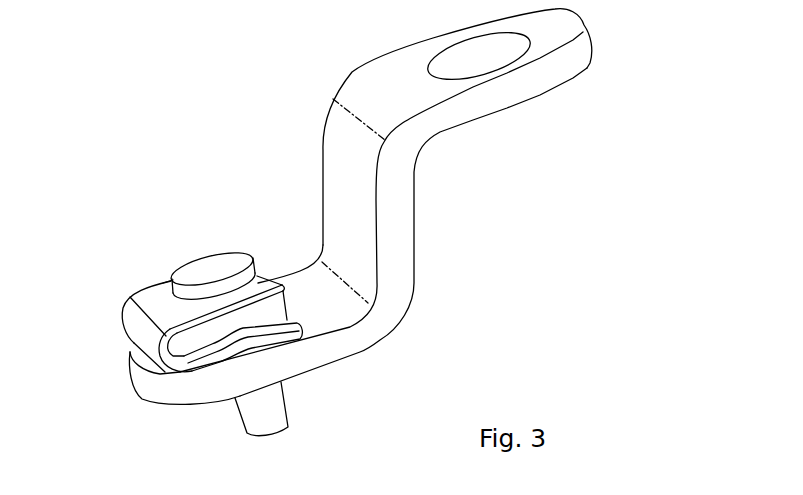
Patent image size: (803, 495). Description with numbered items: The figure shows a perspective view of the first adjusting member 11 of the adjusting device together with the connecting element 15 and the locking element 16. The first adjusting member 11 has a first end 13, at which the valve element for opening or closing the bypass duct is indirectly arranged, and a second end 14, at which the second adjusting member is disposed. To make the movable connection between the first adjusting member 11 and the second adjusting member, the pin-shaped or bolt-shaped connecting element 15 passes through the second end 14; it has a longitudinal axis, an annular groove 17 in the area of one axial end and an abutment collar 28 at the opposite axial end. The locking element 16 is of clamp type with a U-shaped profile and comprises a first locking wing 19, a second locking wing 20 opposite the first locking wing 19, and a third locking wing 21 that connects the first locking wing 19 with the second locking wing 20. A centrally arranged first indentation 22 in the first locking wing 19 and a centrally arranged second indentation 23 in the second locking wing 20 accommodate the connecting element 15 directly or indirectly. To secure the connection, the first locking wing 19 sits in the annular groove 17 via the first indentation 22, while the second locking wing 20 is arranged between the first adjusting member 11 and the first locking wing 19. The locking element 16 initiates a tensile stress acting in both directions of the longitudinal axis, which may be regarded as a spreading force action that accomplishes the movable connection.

The first adjusting member 11 is at (426, 222).
The first end 13 is at (524, 85).
The second end 14 is at (142, 392).
The connecting element 15 is at (206, 237).
The locking element 16 is at (107, 299).
The annular groove 17 is at (272, 268).
The first locking wing 19 is at (164, 279).
The second locking wing 20 is at (209, 374).
The third locking wing 21 is at (140, 326).
The first indentation 22 is at (279, 262).
The second indentation 23 is at (297, 312).
The abutment collar 28 is at (284, 392).